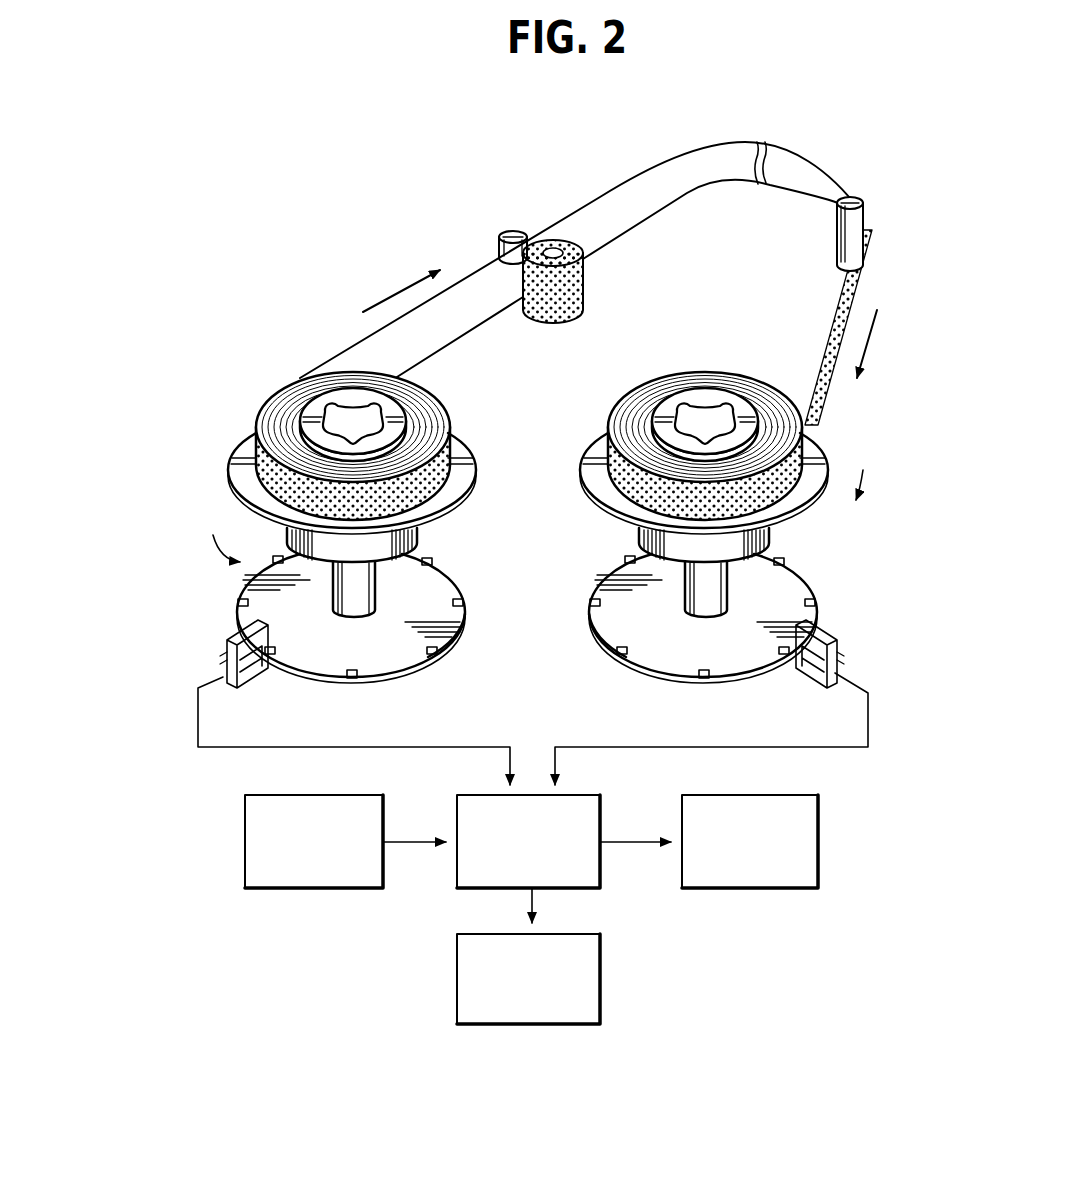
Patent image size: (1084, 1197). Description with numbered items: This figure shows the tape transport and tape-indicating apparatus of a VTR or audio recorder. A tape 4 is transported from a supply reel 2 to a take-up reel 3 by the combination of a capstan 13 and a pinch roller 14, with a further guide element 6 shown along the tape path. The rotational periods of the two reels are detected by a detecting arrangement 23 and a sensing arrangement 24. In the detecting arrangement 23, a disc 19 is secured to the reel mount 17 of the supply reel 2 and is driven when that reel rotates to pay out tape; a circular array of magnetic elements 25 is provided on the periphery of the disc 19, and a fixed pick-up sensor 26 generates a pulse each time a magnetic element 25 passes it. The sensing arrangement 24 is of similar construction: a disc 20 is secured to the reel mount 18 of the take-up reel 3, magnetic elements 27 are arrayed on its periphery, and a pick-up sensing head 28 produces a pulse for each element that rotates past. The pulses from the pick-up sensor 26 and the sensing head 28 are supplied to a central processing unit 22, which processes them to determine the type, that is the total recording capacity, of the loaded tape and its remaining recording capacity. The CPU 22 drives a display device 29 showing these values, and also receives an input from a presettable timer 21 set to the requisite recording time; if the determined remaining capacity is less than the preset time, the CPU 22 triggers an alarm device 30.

The supply reel 2 is at (387, 403).
The take-up reel 3 is at (702, 397).
The tape 4 is at (655, 196).
The guide roller 6 is at (835, 202).
The capstan 13 is at (508, 232).
The pinch roller 14 is at (566, 255).
The reel mount 17 is at (410, 545).
The reel mount 18 is at (762, 543).
The disc 19 is at (448, 590).
The disc 20 is at (800, 585).
The presettable timer 21 is at (332, 873).
The central processing unit 22 is at (575, 873).
The detecting arrangement 23 is at (218, 535).
The sensing arrangement 24 is at (865, 471).
The magnetic elements 25 is at (455, 640).
The pick-up sensor 26 is at (265, 663).
The magnetic elements 27 is at (613, 645).
The pick-up sensing head 28 is at (801, 664).
The display device 29 is at (766, 872).
The alarm device 30 is at (582, 985).